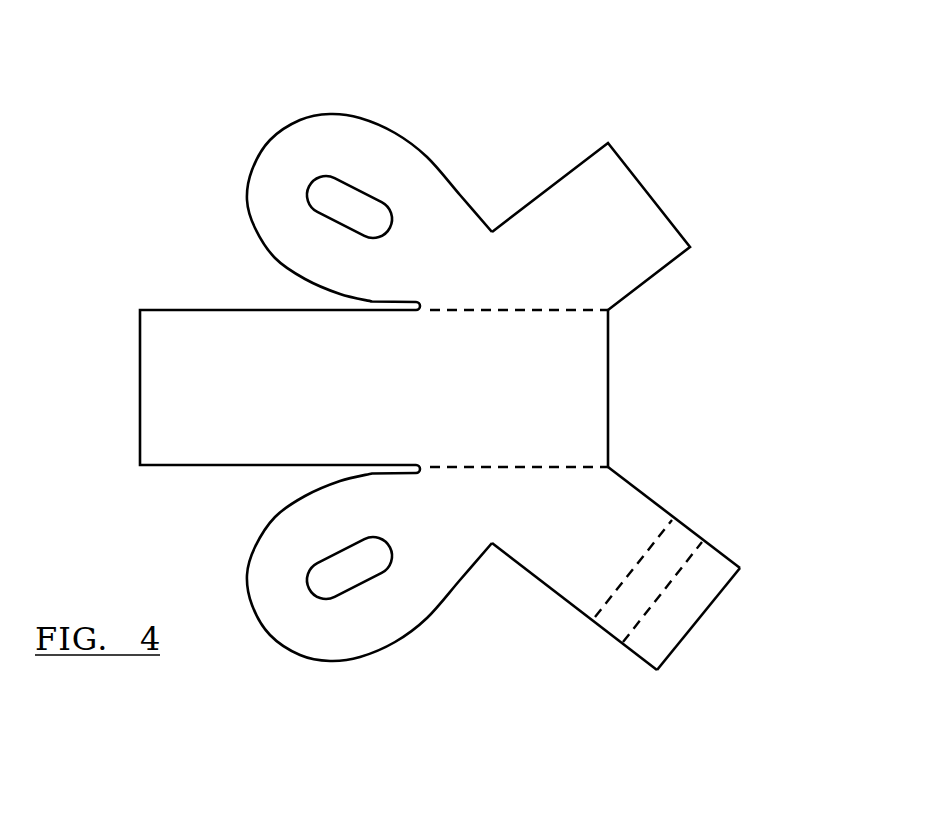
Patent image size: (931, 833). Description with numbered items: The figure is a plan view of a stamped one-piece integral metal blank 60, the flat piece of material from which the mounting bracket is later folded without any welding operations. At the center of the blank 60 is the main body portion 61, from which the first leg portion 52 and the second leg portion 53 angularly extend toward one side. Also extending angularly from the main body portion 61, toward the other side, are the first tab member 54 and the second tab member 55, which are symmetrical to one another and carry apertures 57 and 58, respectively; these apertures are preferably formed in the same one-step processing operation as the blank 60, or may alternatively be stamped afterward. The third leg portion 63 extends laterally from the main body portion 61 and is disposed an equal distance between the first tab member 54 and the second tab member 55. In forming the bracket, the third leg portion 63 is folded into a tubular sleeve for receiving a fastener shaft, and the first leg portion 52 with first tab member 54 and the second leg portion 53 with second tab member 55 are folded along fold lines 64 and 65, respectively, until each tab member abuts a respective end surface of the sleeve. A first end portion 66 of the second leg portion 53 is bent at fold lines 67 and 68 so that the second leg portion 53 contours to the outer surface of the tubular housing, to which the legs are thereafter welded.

The one-piece integral metal blank 60 is at (526, 114).
The first leg portion 52 is at (630, 205).
The second leg portion 53 is at (563, 570).
The first tab member 54 is at (392, 170).
The second tab member 55 is at (363, 627).
The aperture 57 is at (335, 197).
The aperture 58 is at (337, 572).
The main body portion 61 is at (562, 378).
The third leg portion 63 is at (230, 348).
The fold line 64 is at (562, 303).
The fold line 65 is at (568, 465).
The first end portion 66 is at (676, 617).
The fold line 67 is at (662, 532).
The fold line 68 is at (690, 555).